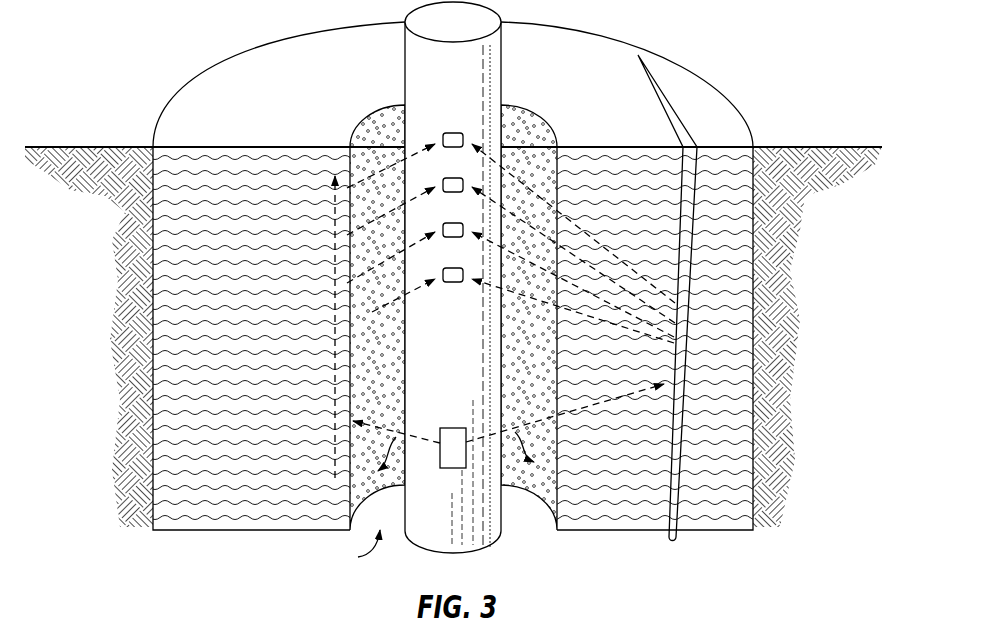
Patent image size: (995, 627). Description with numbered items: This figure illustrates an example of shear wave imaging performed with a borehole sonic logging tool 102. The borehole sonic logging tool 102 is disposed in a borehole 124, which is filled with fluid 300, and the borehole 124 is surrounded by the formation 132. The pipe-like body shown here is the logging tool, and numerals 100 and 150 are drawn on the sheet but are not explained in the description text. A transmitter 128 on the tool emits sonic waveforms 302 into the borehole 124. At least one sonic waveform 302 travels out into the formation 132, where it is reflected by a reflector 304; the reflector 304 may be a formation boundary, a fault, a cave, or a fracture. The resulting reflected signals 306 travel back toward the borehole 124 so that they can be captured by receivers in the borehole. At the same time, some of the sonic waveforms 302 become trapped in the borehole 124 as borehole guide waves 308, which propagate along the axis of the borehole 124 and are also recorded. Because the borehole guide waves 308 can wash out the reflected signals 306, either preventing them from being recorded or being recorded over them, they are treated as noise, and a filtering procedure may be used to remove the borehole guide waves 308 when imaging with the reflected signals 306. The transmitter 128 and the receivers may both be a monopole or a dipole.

The tubular string 100 is at (478, 553).
The borehole sonic logging tool 102 is at (500, 68).
The borehole 124 is at (349, 551).
The transmitter 128 is at (453, 468).
The formation 132 is at (641, 459).
The sensors 150 is at (443, 275).
The fluid 300 is at (401, 362).
The sonic waveforms 302 is at (456, 469).
The reflector 304 is at (689, 240).
The reflected signals 306 is at (597, 317).
The borehole guide waves 308 is at (333, 341).